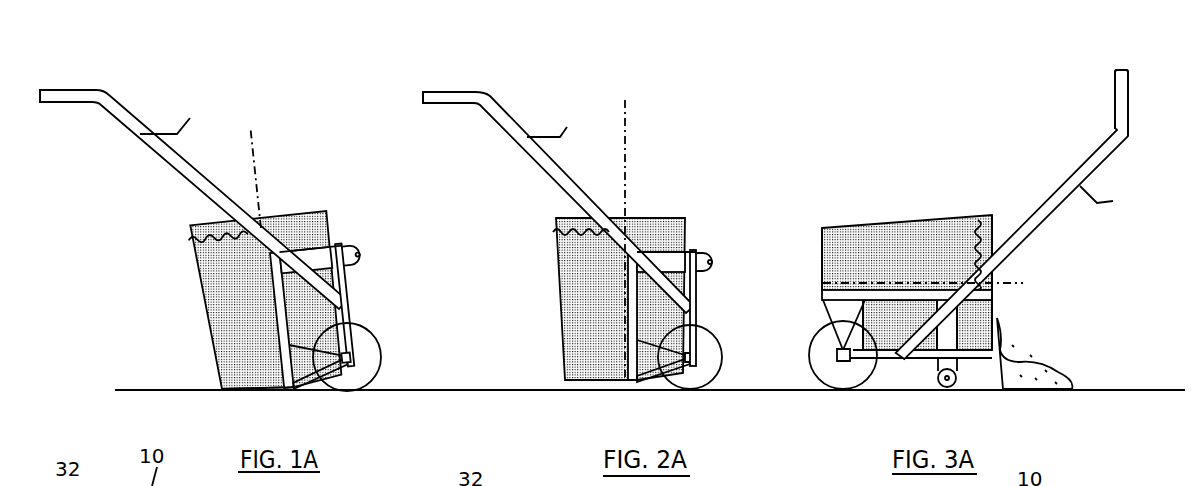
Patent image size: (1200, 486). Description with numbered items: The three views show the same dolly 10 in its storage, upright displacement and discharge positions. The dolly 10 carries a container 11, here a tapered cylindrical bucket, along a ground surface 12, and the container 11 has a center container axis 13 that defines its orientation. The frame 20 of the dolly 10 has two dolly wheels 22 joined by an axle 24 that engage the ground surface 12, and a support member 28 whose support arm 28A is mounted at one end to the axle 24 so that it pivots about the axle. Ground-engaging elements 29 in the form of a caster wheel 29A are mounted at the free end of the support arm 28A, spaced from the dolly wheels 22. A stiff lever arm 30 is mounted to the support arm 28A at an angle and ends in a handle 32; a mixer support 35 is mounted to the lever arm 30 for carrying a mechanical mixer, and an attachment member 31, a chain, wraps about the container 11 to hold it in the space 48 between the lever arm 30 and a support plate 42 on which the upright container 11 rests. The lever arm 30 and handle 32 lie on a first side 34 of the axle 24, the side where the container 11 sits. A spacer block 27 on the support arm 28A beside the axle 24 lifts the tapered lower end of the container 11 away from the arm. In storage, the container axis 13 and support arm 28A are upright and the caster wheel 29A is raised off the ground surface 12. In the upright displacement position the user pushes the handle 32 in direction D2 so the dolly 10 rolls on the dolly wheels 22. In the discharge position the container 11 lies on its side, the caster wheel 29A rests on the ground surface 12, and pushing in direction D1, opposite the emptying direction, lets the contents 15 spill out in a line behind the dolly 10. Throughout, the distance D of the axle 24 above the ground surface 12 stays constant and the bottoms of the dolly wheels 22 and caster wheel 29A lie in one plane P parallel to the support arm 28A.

In FIG. 1A, the dolly 10 is at (180, 80).
In FIG. 2A, the dolly 10 is at (562, 58).
In FIG. 3A, the dolly 10 is at (1048, 106).
In FIG. 1A, the container 11 is at (210, 296).
In FIG. 2A, the container 11 is at (662, 227).
In FIG. 3A, the container 11 is at (993, 220).
In FIG. 1A, the ground surface 12 is at (437, 387).
In FIG. 3A, the ground surface 12 is at (908, 392).
In FIG. 1A, the container axis 13 is at (257, 152).
In FIG. 2A, the container axis 13 is at (628, 97).
In FIG. 3A, the container axis 13 is at (1030, 283).
In FIG. 3A, the contents 15 is at (1063, 374).
In FIG. 1A, the frame 20 is at (309, 318).
In FIG. 2A, the frame 20 is at (670, 317).
In FIG. 3A, the frame 20 is at (814, 282).
In FIG. 1A, the dolly wheels 22 is at (368, 331).
In FIG. 2A, the dolly wheels 22 is at (700, 375).
In FIG. 3A, the dolly wheels 22 is at (828, 375).
In FIG. 3A, the axle 24 is at (836, 357).
In FIG. 1A, the spacer block 27 is at (349, 355).
In FIG. 3A, the spacer block 27 is at (832, 346).
In FIG. 1A, the support member 28 is at (350, 283).
In FIG. 2A, the support member 28 is at (706, 291).
In FIG. 1A, the support arm 28A is at (336, 243).
In FIG. 2A, the support arm 28A is at (698, 256).
In FIG. 3A, the support arm 28A is at (835, 312).
In FIG. 1A, the ground-engaging elements 29 is at (370, 235).
In FIG. 1A, the caster wheel 29A is at (369, 251).
In FIG. 3A, the caster wheel 29A is at (957, 388).
In FIG. 1A, the lever arm 30 is at (158, 175).
In FIG. 2A, the lever arm 30 is at (558, 202).
In FIG. 3A, the lever arm 30 is at (1012, 214).
In FIG. 2A, the attachment member 31 is at (567, 220).
In FIG. 3A, the attachment member 31 is at (973, 233).
In FIG. 1A, the handle 32 is at (68, 102).
In FIG. 2A, the handle 32 is at (448, 95).
In FIG. 3A, the handle 32 is at (1129, 94).
In FIG. 1A, the first side 34 is at (163, 280).
In FIG. 3A, the first side 34 is at (930, 154).
In FIG. 1A, the mixer support 35 is at (170, 130).
In FIG. 2A, the mixer support 35 is at (547, 132).
In FIG. 3A, the mixer support 35 is at (1093, 197).
In FIG. 1A, the support plate 42 is at (247, 387).
In FIG. 2A, the support plate 42 is at (590, 377).
In FIG. 3A, the support plate 42 is at (842, 237).
In FIG. 1A, the space 48 is at (251, 337).
In FIG. 3A, the space 48 is at (927, 272).
In FIG. 1A, the plane P is at (380, 335).
In FIG. 2A, the plane P is at (722, 315).
In FIG. 3A, the plane P is at (880, 385).
In FIG. 1A, the distance D is at (349, 358).
In FIG. 3A, the distance D is at (860, 360).
In FIG. 3A, the direction D1 is at (993, 93).
In FIG. 2A, the direction D2 is at (762, 97).